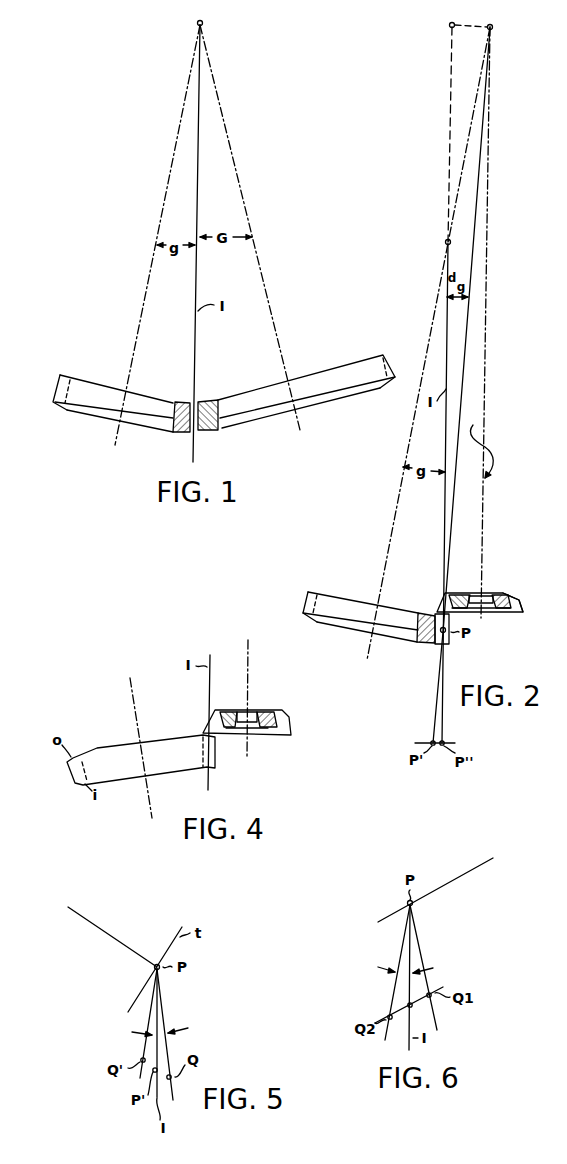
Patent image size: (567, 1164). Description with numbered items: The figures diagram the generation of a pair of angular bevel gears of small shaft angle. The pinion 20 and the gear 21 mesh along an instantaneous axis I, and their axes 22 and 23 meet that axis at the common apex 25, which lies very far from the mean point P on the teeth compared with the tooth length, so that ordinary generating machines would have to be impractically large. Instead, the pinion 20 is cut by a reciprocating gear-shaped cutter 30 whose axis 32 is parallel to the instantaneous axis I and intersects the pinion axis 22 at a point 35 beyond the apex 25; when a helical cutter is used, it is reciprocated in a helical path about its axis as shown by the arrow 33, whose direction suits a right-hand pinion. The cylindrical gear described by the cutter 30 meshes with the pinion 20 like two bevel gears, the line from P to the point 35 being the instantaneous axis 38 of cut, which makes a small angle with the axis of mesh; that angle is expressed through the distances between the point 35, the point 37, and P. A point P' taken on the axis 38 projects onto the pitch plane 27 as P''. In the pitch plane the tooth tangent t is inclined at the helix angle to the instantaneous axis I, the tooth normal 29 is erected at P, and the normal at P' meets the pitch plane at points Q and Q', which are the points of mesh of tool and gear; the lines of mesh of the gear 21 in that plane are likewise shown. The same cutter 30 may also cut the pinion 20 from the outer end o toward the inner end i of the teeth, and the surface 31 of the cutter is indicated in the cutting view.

In FIG. 1, the pinion 20 is at (88, 408).
In FIG. 2, the pinion 20 is at (356, 622).
In FIG. 4, the pinion 20 is at (112, 762).
In FIG. 1, the gear 21 is at (350, 380).
In FIG. 1, the axis of pinion 22 is at (146, 304).
In FIG. 2, the axis of pinion 22 is at (388, 543).
In FIG. 4, the axis of pinion 22 is at (134, 706).
In FIG. 1, the axis of gear 23 is at (273, 316).
In FIG. 1, the common apex 25 is at (204, 22).
In FIG. 2, the common apex 25 is at (445, 242).
In FIG. 2, the pitch plane 27 is at (449, 126).
In FIG. 5, the tooth normal 29 is at (112, 934).
In FIG. 2, the gear-shaped cutter 30 is at (499, 592).
In FIG. 4, the gear-shaped cutter 30 is at (271, 711).
In FIG. 2, the reflecting surface 31 is at (520, 604).
In FIG. 2, the cutter axis 32 is at (483, 526).
In FIG. 4, the cutter axis 32 is at (249, 671).
In FIG. 2, the arrow 33 is at (495, 447).
In FIG. 2, the intersection point 35 is at (494, 27).
In FIG. 2, the point 37 is at (449, 25).
In FIG. 2, the instantaneous axis of cut 38 is at (453, 519).